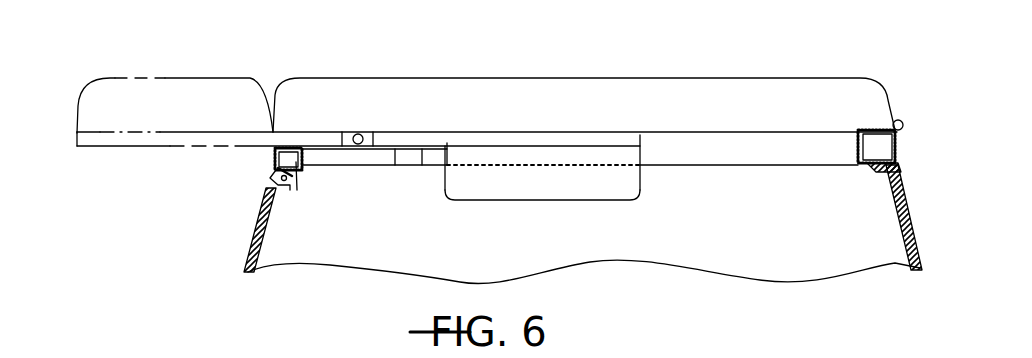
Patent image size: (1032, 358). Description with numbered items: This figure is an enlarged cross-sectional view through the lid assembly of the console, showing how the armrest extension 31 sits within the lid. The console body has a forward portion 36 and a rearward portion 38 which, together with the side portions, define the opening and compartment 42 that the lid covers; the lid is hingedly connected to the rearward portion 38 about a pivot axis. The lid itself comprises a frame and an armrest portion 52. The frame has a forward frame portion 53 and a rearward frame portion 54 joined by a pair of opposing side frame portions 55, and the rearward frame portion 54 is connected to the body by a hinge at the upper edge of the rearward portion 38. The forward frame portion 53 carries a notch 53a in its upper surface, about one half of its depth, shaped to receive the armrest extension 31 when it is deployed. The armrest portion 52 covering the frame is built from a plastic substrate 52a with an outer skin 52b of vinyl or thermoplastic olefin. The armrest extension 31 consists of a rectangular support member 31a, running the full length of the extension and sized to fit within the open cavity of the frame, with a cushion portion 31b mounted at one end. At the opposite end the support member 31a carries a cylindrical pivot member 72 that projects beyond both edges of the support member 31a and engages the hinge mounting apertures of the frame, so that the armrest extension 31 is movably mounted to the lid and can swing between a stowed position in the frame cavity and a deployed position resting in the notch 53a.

The armrest extension 31 is at (584, 204).
The support member 31a is at (640, 135).
The cushion portion 31b is at (488, 192).
The forward portion 36 is at (250, 262).
The rearward portion 38 is at (894, 205).
The opening and compartment 42 is at (820, 268).
The armrest portion 52 is at (757, 91).
The substrate 52a is at (297, 123).
The skin 52b is at (630, 78).
The forward frame portion 53 is at (268, 160).
The notch 53a is at (268, 96).
The rearward frame portion 54 is at (898, 120).
The side frame portion 55 is at (340, 158).
The pivot member 72 is at (363, 131).